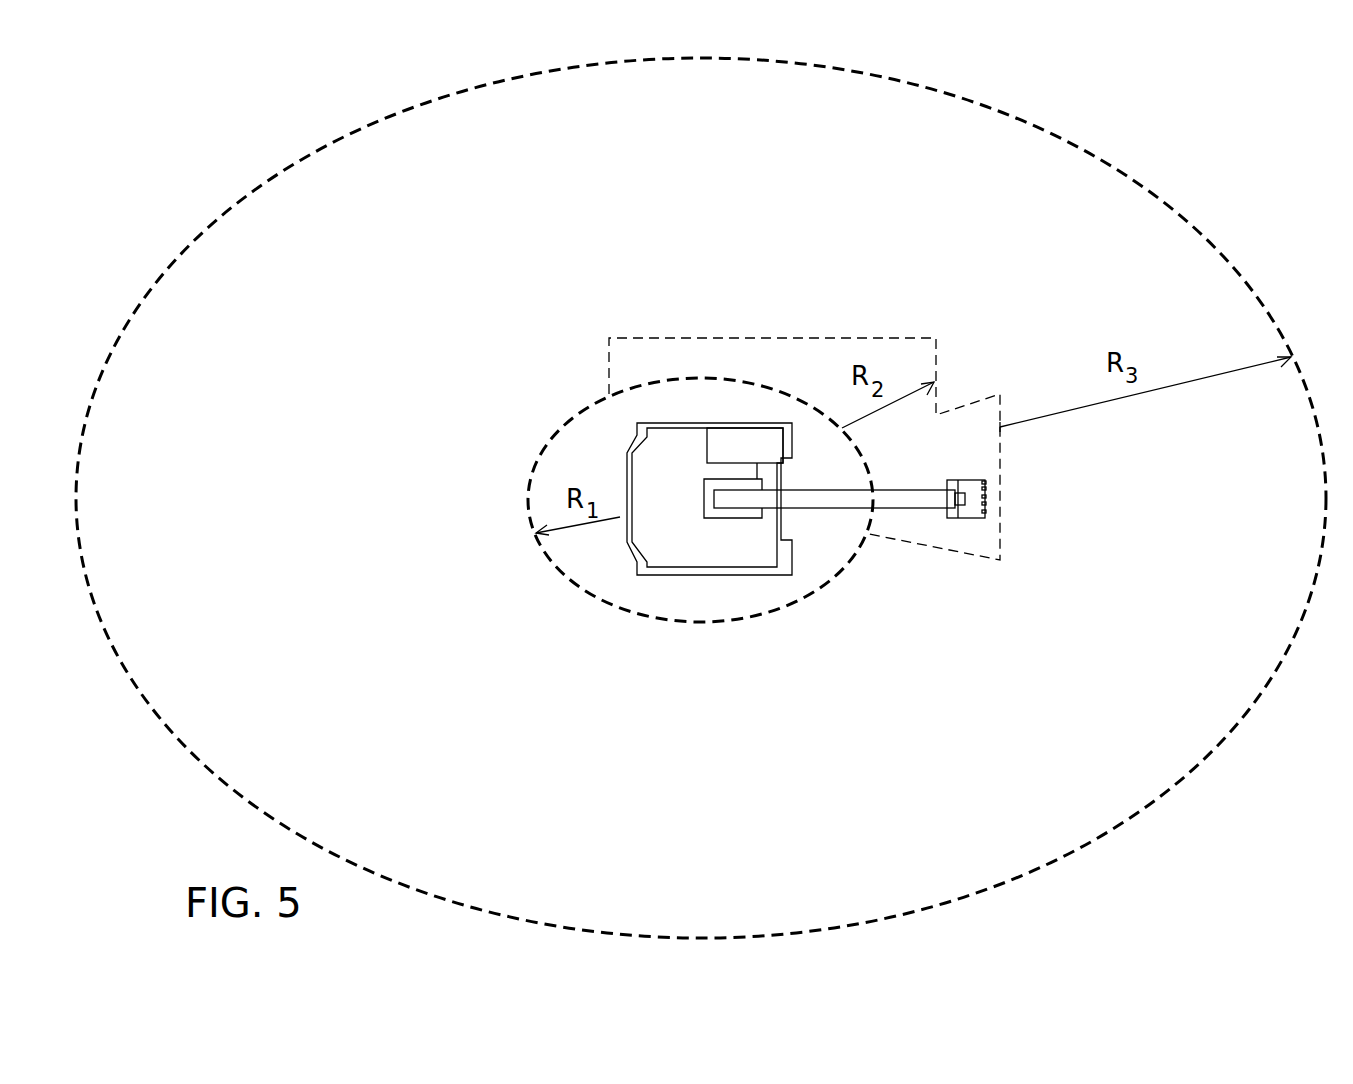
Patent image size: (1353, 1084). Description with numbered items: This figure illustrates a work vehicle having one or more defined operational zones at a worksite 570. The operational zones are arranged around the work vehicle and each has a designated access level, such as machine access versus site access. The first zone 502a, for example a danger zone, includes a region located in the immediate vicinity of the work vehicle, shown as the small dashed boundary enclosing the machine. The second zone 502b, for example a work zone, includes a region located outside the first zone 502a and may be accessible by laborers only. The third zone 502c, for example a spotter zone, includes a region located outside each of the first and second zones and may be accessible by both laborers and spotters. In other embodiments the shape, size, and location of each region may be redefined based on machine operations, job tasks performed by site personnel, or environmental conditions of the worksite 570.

The worksite 570 is at (1257, 99).
The first zone 502a is at (618, 612).
The second zone 502b is at (842, 338).
The third zone 502c is at (1211, 240).